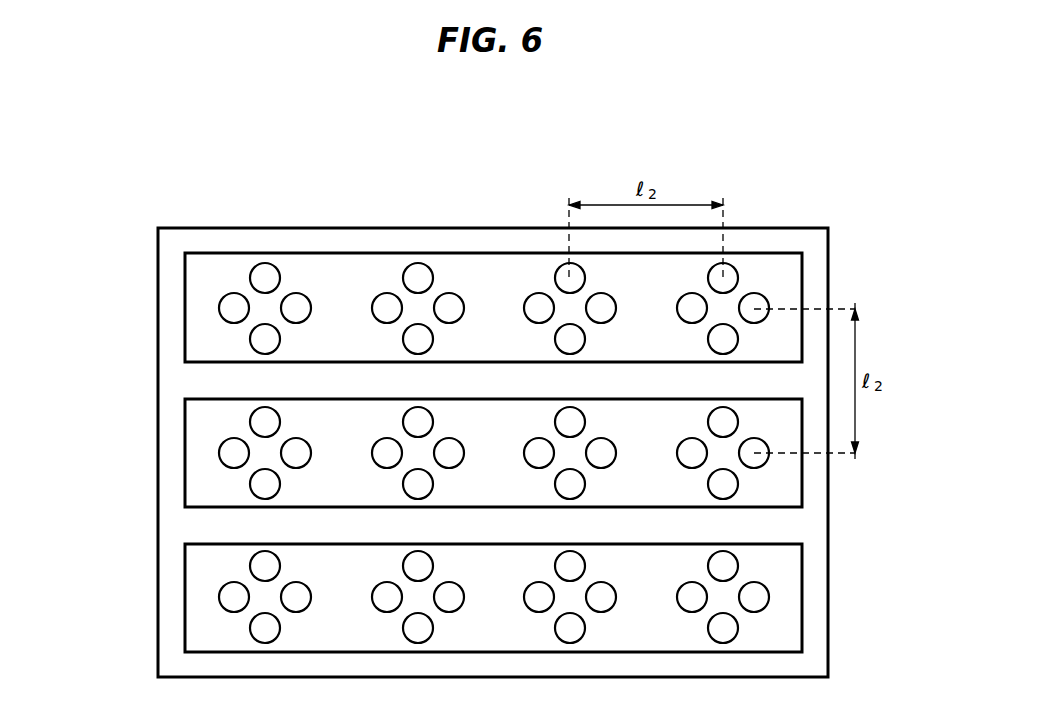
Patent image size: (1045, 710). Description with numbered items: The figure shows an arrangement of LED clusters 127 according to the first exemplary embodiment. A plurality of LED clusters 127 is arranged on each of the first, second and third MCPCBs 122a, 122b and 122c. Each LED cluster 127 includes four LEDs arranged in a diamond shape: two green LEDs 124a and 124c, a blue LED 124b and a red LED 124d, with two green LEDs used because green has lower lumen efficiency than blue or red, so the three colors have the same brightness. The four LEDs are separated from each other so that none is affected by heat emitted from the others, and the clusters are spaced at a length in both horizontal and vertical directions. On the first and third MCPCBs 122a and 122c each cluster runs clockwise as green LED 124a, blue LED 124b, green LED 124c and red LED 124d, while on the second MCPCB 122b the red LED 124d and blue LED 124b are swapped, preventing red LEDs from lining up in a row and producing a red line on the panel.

The LED cluster 127 is at (146, 138).
The green LED 124a is at (253, 272).
The blue LED 124b is at (296, 294).
The green LED 124c is at (279, 328).
The red LED 124d is at (222, 303).
The first MCPCB 122a is at (795, 273).
The second MCPCB 122b is at (795, 483).
The third MCPCB 122c is at (795, 588).